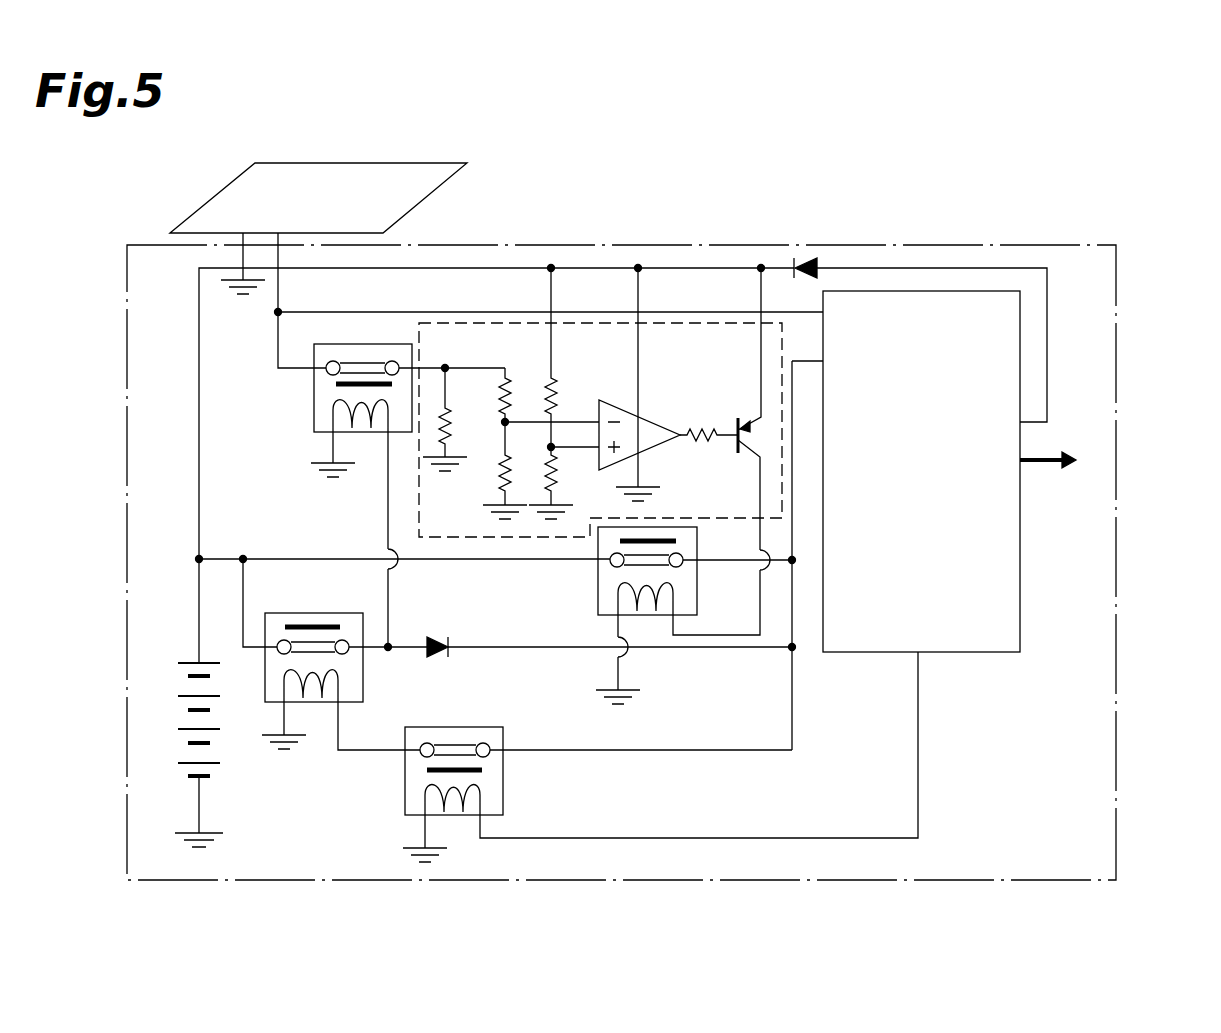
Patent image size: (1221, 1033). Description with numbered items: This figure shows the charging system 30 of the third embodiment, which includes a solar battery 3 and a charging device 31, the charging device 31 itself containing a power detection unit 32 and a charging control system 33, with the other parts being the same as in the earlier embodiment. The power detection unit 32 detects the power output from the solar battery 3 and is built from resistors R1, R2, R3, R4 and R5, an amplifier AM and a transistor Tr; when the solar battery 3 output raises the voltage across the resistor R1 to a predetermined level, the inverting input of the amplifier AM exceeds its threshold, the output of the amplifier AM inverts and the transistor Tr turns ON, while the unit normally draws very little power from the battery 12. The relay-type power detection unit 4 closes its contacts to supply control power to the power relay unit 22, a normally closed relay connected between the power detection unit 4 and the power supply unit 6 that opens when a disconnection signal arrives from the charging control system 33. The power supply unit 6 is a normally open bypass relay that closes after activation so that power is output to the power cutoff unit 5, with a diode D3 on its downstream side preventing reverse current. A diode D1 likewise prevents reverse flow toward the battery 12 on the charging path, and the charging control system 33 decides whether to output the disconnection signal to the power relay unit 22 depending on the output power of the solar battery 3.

The solar battery 3 is at (327, 163).
The power detection unit 4 is at (598, 585).
The power cutoff unit 5 is at (314, 398).
The power supply unit 6 is at (320, 613).
The battery 12 is at (190, 661).
The power relay unit 22 is at (478, 727).
The charging system 30 is at (1130, 165).
The charging device 31 is at (1047, 245).
The power detection unit 32 is at (689, 323).
The charging control system 33 is at (1020, 610).
The diode D1 is at (799, 258).
The diode D3 is at (437, 637).
The transistor Tr is at (745, 426).
The amplifier AM is at (646, 414).
The resistor R1 is at (448, 414).
The resistor R2 is at (507, 378).
The resistor R3 is at (500, 478).
The resistor R4 is at (553, 380).
The resistor R5 is at (557, 473).